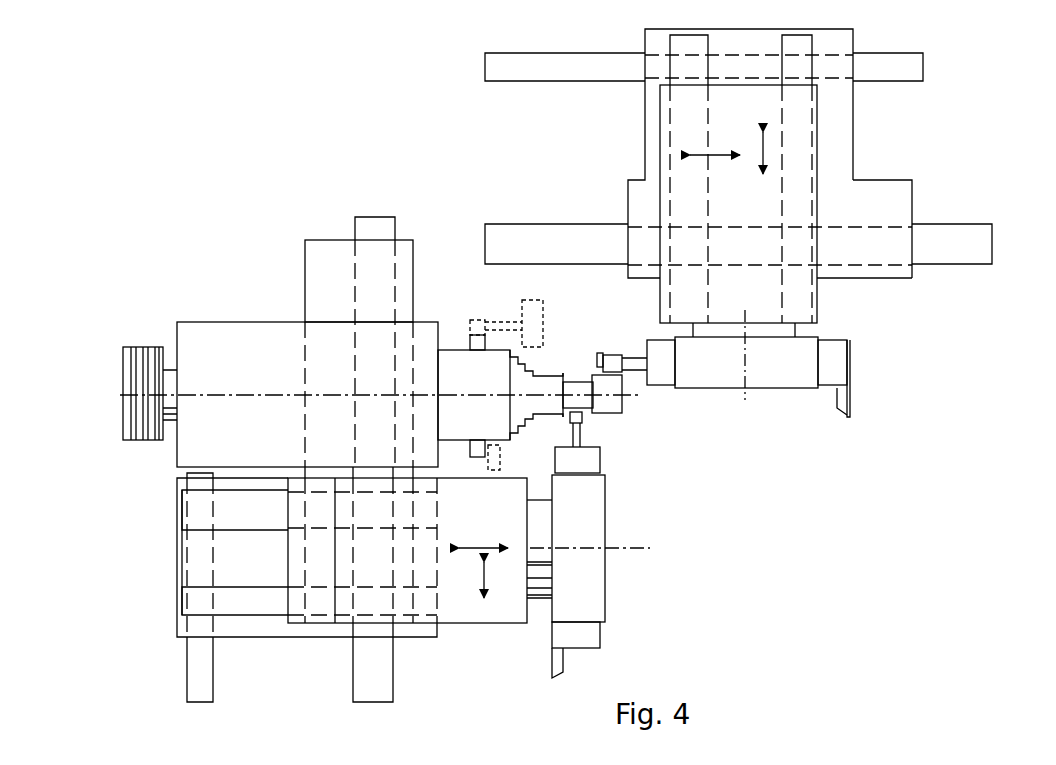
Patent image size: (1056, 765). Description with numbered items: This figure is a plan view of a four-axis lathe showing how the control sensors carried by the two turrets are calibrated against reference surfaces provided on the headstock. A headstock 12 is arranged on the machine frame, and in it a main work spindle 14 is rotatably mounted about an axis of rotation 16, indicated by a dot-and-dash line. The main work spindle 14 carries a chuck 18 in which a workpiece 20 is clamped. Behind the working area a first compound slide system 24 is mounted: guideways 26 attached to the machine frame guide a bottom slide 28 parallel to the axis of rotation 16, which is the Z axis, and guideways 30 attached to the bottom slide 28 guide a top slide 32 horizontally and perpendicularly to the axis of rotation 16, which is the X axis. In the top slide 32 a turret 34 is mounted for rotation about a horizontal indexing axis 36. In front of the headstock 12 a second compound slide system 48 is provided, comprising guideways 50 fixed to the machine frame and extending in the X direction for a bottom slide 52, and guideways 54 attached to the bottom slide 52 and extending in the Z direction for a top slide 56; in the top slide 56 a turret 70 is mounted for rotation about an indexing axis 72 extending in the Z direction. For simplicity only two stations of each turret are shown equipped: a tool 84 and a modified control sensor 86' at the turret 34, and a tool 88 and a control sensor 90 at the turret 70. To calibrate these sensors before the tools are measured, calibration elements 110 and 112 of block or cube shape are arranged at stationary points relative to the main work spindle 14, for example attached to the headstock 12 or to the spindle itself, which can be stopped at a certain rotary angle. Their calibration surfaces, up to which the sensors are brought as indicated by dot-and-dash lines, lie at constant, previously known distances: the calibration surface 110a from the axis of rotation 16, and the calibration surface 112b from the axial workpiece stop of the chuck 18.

The headstock 12 is at (205, 330).
The main work spindle 14 is at (172, 368).
The axis of rotation 16 is at (255, 395).
The chuck 18 is at (535, 378).
The workpiece 20 is at (575, 384).
The first compound slide system 24 is at (855, 139).
The guideways 26 is at (923, 67).
The bottom slide 28 is at (885, 198).
The guideways 30 is at (688, 65).
The top slide 32 is at (678, 117).
The turret 34 is at (798, 380).
The indexing axis 36 is at (745, 400).
The second compound slide system 48 is at (176, 546).
The guideways 50 is at (362, 670).
The bottom slide 52 is at (190, 567).
The guideways 54 is at (250, 597).
The top slide 56 is at (473, 610).
The turret 70 is at (597, 588).
The indexing axis 72 is at (650, 548).
The tool 84 is at (850, 372).
The control sensor 86' is at (619, 351).
The tool 88 is at (590, 632).
The control sensor 90 is at (585, 431).
The calibration element 110 is at (468, 335).
The calibration surface 110a is at (462, 300).
The calibration element 112 is at (473, 457).
The calibration surface 112b is at (487, 452).